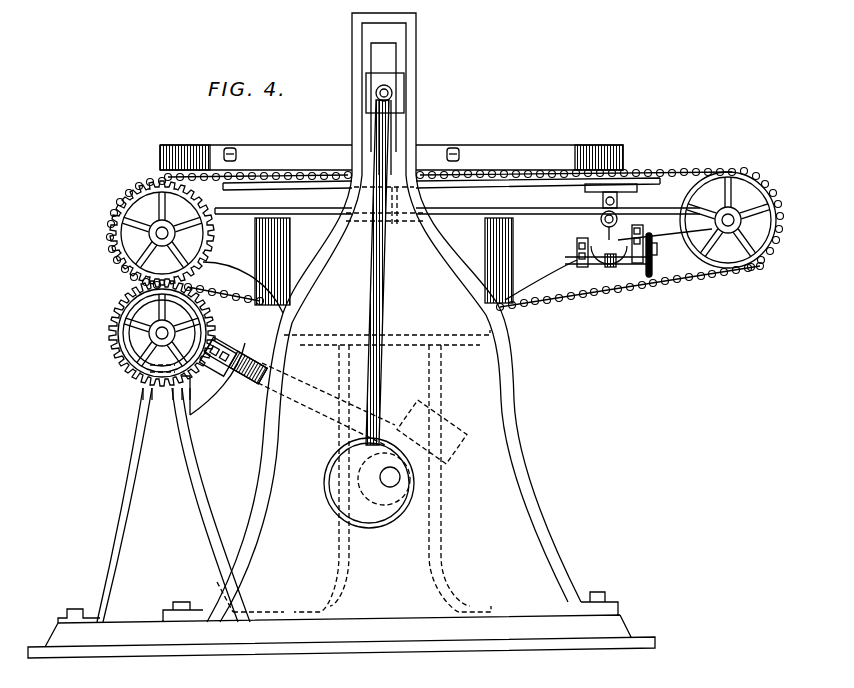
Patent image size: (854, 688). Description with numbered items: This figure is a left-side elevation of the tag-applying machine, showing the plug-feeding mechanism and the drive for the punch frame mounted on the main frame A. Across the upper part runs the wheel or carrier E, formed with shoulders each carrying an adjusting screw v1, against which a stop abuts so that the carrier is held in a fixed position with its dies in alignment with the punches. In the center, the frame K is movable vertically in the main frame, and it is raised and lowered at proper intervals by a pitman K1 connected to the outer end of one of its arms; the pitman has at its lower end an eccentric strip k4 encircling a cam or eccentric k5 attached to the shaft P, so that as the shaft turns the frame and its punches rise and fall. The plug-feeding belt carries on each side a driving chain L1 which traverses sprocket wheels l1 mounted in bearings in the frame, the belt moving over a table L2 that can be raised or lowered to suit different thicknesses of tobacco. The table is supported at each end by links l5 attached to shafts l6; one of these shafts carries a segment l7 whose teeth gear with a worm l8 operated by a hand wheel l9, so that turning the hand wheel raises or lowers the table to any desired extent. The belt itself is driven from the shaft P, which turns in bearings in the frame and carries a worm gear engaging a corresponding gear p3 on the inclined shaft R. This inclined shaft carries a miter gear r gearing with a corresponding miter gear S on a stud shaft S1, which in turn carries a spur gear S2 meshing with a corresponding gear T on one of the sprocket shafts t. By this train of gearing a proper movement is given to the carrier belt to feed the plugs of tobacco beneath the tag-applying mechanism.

The frame A is at (466, 538).
The wheel or carrier E is at (391, 158).
The adjusting screw v1 is at (230, 148).
The frame K is at (392, 92).
The pitman K1 is at (386, 316).
The driving chain L1 is at (670, 171).
The table L2 is at (512, 186).
The sprocket wheel l1 is at (206, 203).
The shaft t is at (732, 216).
The gear T is at (118, 238).
The miter gear S is at (140, 318).
The stud shaft S1 is at (152, 333).
The spur gear S2 is at (135, 347).
The miter gear r is at (212, 333).
The inclined shaft R is at (256, 370).
The gear p3 is at (440, 432).
The shaft P is at (392, 484).
The eccentric strip k4 is at (380, 528).
The cam or eccentric k5 is at (384, 479).
The link l5 is at (603, 204).
The shaft l6 is at (601, 225).
The segment l7 is at (577, 240).
The worm l8 is at (610, 268).
The hand wheel l9 is at (654, 270).